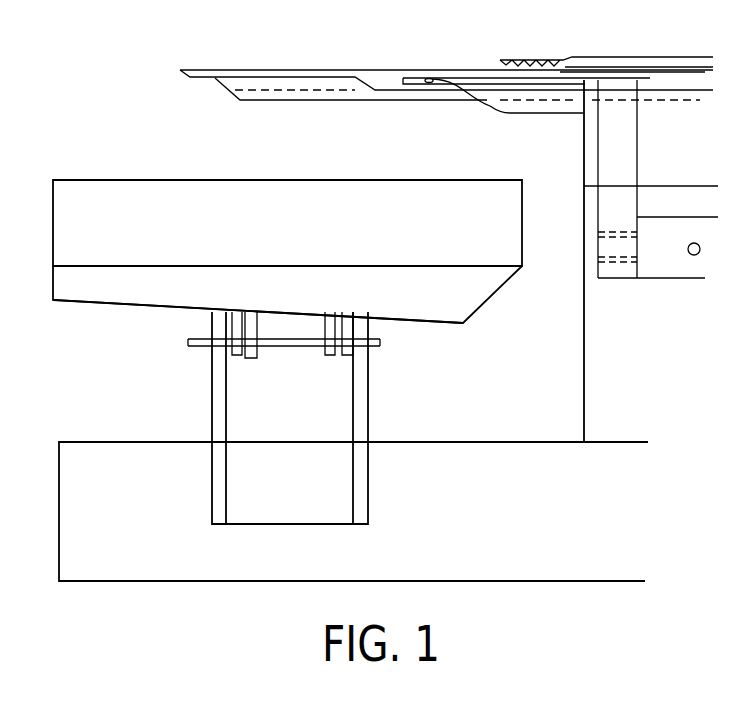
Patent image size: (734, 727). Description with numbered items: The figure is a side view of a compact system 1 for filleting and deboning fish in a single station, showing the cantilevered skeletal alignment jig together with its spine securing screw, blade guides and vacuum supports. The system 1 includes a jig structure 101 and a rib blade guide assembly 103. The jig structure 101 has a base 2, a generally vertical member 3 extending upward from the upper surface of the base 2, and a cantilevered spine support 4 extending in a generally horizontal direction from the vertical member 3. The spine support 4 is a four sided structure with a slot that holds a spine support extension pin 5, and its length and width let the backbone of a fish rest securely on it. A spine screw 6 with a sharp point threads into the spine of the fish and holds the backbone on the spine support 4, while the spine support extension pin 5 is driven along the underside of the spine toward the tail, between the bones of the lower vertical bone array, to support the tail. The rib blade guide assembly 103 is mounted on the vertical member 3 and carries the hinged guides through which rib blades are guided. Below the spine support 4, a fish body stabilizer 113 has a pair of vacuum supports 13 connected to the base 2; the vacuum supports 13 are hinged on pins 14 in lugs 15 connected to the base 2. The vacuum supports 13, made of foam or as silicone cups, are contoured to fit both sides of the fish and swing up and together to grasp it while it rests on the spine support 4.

The system 1 is at (184, 592).
The base 2 is at (59, 498).
The vertical member 3 is at (584, 313).
The spine support 4 is at (236, 98).
The spine support extension pin 5 is at (192, 68).
The spine screw 6 is at (548, 65).
The vacuum supports 13 is at (125, 302).
The pins 14 is at (198, 353).
The lugs 15 is at (345, 357).
The jig structure 101 is at (470, 20).
The rib blade guide assembly 103 is at (670, 287).
The fish body stabilizer 113 is at (176, 166).